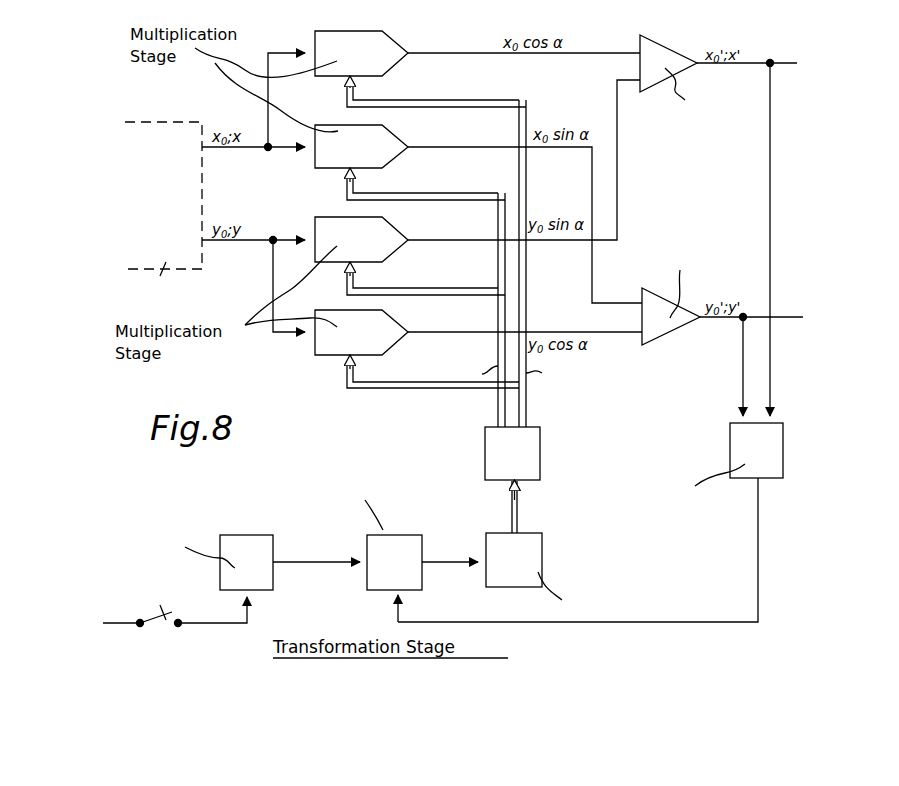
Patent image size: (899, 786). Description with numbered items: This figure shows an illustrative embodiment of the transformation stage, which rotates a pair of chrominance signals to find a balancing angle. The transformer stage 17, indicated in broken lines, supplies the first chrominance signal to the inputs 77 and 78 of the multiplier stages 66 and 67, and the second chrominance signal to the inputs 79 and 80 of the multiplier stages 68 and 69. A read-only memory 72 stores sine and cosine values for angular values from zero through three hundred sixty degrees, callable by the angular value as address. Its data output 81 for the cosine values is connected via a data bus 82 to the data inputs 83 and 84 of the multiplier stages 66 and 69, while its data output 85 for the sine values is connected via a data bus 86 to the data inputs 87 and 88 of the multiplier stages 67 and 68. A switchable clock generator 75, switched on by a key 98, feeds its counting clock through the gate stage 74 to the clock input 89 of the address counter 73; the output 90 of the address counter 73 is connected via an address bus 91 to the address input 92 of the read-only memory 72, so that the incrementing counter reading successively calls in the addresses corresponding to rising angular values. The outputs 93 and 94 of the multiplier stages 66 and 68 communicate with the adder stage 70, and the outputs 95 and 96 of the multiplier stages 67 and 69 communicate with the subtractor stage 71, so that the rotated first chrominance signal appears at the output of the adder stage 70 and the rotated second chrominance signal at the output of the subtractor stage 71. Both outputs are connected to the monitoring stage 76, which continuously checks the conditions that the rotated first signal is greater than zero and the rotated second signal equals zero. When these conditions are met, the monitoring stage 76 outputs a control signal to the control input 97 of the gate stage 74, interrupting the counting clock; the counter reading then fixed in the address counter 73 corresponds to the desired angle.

The transformer stage 17 is at (138, 215).
The multiplier stage 66 is at (355, 40).
The multiplier stage 67 is at (338, 131).
The multiplier stage 68 is at (338, 223).
The multiplier stage 69 is at (341, 318).
The adder stage 70 is at (677, 63).
The subtractor stage 71 is at (665, 297).
The read-only memory 72 is at (540, 458).
The address counter 73 is at (542, 555).
The gate stage 74 is at (401, 543).
The clock generator 75 is at (250, 546).
The monitoring stage 76 is at (730, 458).
The input of multiplier stage 66 77 is at (312, 52).
The input of multiplier stage 67 78 is at (312, 152).
The input of multiplier stage 68 79 is at (312, 237).
The input of multiplier stage 69 80 is at (312, 344).
The data output of read-only memory 81 is at (528, 427).
The data bus 82 is at (526, 278).
The data input of multiplier stage 66 83 is at (355, 80).
The data input of multiplier stage 69 84 is at (355, 361).
The data output of read-only memory 85 is at (496, 427).
The data bus 86 is at (486, 268).
The data input of multiplier stage 67 87 is at (355, 174).
The data input of multiplier stage 68 88 is at (355, 268).
The clock input of address counter 89 is at (485, 570).
The output of address counter 90 is at (518, 533).
The address bus 91 is at (518, 505).
The address input of read-only memory 92 is at (506, 488).
The output of multiplier stage 66 93 is at (410, 52).
The output of multiplier stage 68 94 is at (410, 240).
The output of multiplier stage 67 95 is at (410, 147).
The output of multiplier stage 69 96 is at (410, 332).
The control input of gate stage 97 is at (388, 596).
The key 98 is at (152, 617).